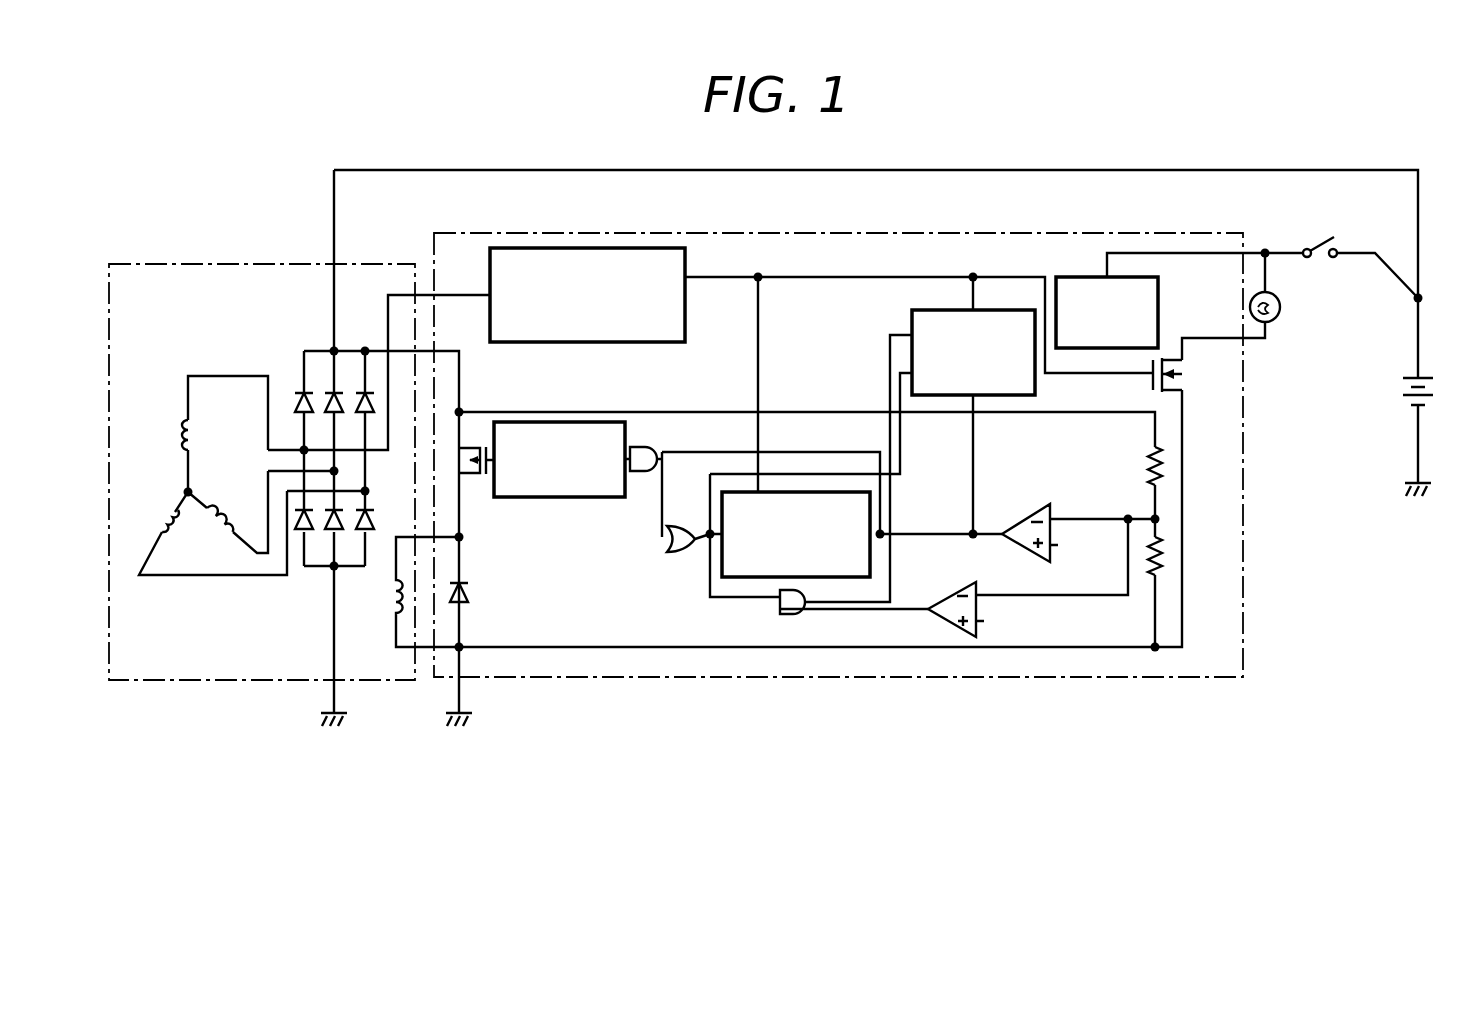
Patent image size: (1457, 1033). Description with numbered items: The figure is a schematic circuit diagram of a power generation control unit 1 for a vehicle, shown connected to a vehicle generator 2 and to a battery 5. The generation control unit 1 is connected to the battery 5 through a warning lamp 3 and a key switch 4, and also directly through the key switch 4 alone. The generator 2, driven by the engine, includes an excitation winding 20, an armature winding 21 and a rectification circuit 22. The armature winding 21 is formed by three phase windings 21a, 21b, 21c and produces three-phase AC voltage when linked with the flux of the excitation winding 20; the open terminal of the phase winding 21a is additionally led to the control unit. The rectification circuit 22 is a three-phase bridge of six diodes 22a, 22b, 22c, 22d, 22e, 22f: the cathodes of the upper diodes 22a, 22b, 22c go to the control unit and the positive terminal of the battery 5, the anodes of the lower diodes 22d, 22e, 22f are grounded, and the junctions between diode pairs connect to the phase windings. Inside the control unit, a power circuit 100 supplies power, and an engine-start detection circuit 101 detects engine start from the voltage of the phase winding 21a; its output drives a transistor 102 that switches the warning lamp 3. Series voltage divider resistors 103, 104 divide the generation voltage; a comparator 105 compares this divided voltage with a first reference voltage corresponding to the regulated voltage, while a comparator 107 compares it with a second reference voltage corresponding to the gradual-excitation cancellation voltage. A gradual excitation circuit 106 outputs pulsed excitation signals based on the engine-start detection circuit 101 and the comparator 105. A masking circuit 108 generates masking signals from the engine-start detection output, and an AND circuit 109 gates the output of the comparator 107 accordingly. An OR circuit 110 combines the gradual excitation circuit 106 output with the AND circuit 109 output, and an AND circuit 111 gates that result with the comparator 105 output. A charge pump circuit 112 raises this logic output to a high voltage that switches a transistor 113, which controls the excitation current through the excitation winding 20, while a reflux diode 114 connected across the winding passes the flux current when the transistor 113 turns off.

The power generation control unit 1 is at (1250, 600).
The generator 2 is at (212, 262).
The warning lamp 3 is at (1282, 318).
The key switch 4 is at (1320, 240).
The battery 5 is at (1427, 377).
The excitation winding 20 is at (391, 595).
The armature winding 21 is at (204, 450).
The phase winding 21a is at (197, 430).
The phase winding 21b is at (234, 513).
The phase winding 21c is at (165, 521).
The rectification circuit 22 is at (334, 457).
The diode 22a is at (297, 406).
The diode 22b is at (340, 410).
The diode 22c is at (358, 407).
The diode 22d is at (303, 534).
The diode 22e is at (330, 524).
The diode 22f is at (360, 526).
The power circuit 100 is at (1160, 296).
The engine-start detection circuit 101 is at (654, 343).
The transistor for driving warning lamp 102 is at (1153, 382).
The voltage divider resistor 103 is at (1170, 462).
The voltage divider resistor 104 is at (1170, 552).
The comparator for generation voltage detection 105 is at (1024, 518).
The gradual excitation circuit 106 is at (836, 491).
The comparator for gradual-excitation cancellation 107 is at (948, 597).
The masking circuit 108 is at (912, 322).
The AND circuit 109 is at (778, 607).
The OR circuit 110 is at (684, 556).
The AND circuit 111 is at (647, 476).
The charge pump circuit 112 is at (580, 498).
The transistor for excitation current control 113 is at (470, 477).
The reflux diode 114 is at (472, 590).